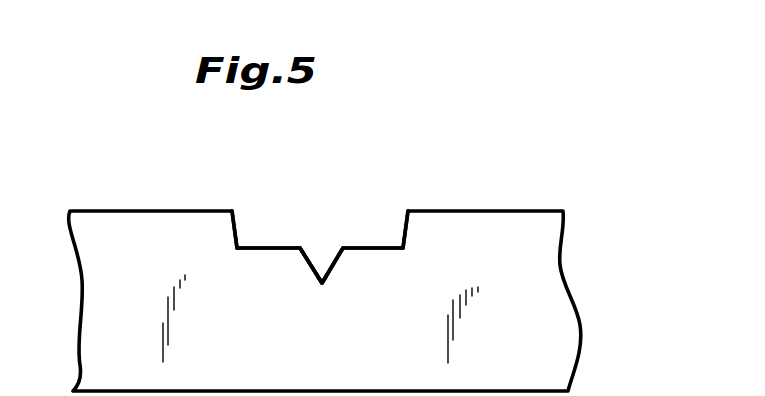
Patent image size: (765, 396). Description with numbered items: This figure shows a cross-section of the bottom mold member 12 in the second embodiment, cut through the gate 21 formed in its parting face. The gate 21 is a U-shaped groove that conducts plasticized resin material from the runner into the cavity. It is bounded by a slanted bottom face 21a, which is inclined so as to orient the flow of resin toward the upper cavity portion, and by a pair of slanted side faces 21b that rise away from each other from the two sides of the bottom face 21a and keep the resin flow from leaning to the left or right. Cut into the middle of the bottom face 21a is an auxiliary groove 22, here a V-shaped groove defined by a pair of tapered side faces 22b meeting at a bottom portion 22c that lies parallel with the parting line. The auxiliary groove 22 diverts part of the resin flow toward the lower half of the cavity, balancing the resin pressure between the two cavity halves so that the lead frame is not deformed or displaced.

The bottom mold member 12 is at (538, 260).
The gate 21 is at (388, 233).
The slanted bottom face 21a is at (349, 248).
The slanted side faces 21b is at (236, 226).
The auxiliary groove 22 is at (306, 216).
The tapered side faces 22b is at (304, 254).
The bottom portion 22c is at (322, 283).